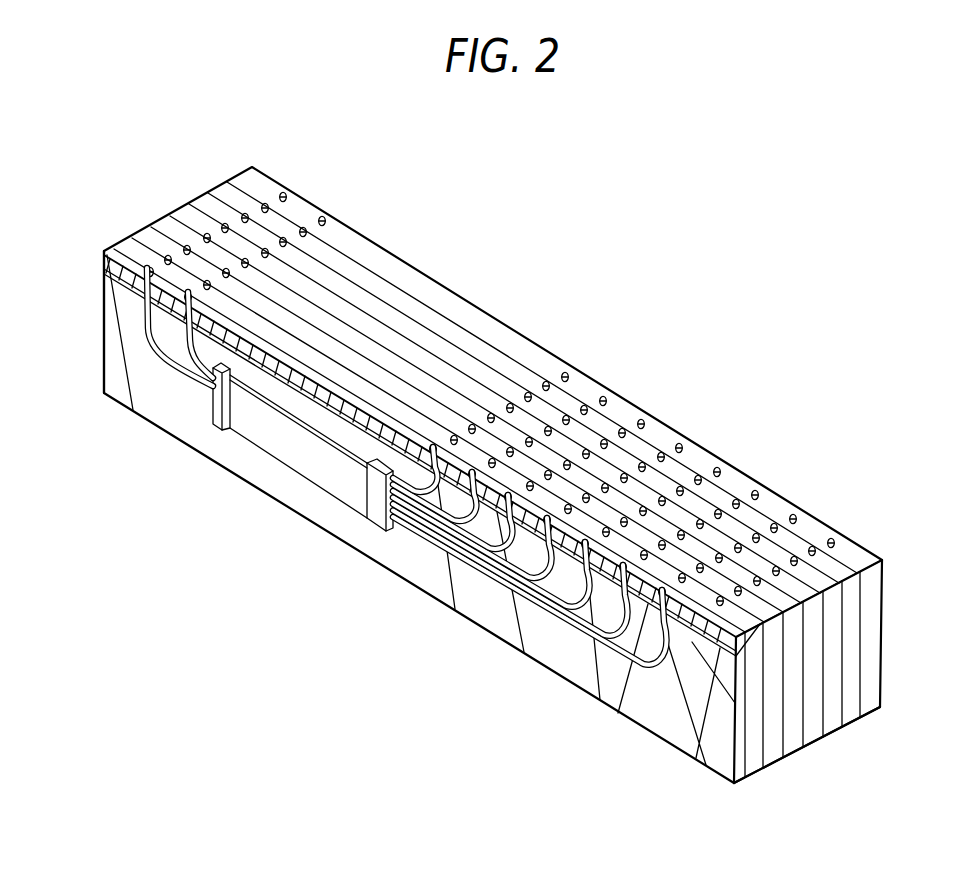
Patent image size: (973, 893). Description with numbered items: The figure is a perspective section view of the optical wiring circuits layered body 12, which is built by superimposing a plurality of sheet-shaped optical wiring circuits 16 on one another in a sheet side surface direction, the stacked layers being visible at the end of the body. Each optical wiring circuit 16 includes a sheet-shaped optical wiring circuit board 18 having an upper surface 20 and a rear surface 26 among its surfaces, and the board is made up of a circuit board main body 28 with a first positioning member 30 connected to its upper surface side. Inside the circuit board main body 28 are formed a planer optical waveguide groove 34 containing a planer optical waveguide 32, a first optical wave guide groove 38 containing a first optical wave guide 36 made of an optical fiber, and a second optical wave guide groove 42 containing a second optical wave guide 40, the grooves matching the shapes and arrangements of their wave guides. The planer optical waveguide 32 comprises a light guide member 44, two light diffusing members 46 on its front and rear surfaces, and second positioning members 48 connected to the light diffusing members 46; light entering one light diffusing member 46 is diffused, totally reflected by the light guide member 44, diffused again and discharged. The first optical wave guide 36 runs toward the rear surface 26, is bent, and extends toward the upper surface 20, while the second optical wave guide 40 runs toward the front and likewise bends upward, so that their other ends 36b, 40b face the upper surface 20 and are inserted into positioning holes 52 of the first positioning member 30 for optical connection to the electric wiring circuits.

The optical wiring circuits layered body 12 is at (204, 174).
The optical wiring circuit 16 is at (794, 770).
The optical wiring circuit board 18 is at (699, 762).
The upper surface 20 is at (352, 337).
The rear surface 26 is at (855, 637).
The circuit board main body 28 is at (118, 377).
The first positioning member 30 is at (104, 257).
The planer optical waveguide 32 is at (305, 500).
The planer optical waveguide groove 34 is at (357, 522).
The first optical wave guide 36 is at (149, 348).
The other end of the first optical wave guide 36b is at (189, 290).
The first optical wave guide groove 38 is at (190, 352).
The second optical wave guide 40 is at (549, 632).
The other end of the second optical wave guide 40b is at (670, 633).
The second optical wave guide groove 42 is at (618, 664).
The light guide member 44 is at (281, 458).
The light diffusing member 46 is at (230, 432).
The second positioning member 48 is at (213, 392).
The positioning hole 52 is at (104, 309).